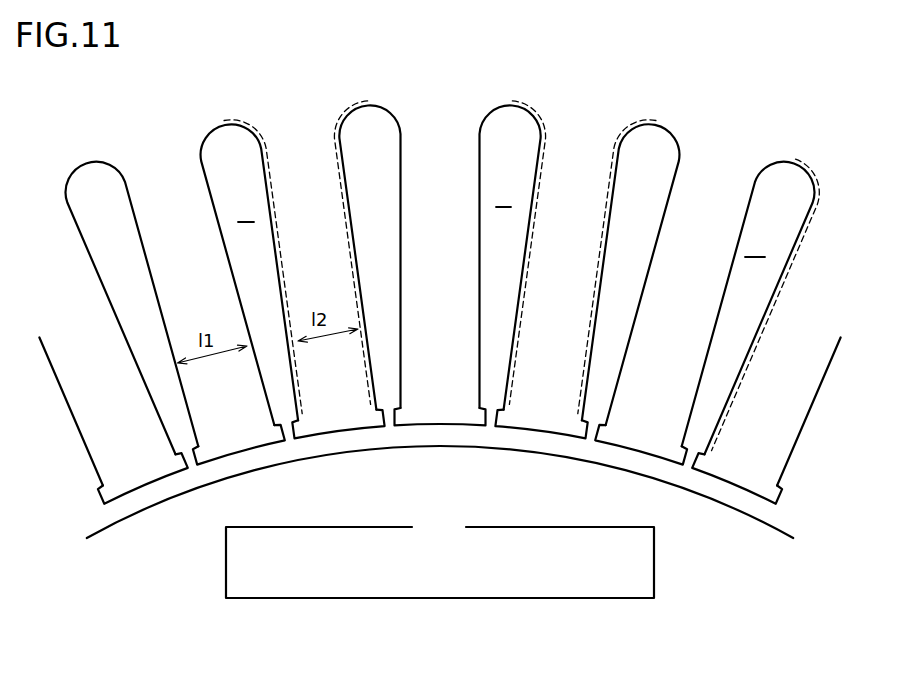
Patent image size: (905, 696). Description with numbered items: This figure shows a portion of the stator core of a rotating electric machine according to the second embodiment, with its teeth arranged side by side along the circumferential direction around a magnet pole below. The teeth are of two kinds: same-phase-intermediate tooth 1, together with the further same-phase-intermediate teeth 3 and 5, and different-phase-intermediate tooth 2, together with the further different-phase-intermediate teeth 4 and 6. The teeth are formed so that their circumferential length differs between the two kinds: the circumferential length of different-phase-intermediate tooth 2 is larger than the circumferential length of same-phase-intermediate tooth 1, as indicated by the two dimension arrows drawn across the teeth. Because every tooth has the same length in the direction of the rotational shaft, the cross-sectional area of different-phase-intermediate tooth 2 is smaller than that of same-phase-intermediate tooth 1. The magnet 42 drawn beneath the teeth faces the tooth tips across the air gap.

The same-phase-intermediate tooth 1 is at (165, 187).
The different-phase-intermediate tooth 2 is at (300, 168).
The same-phase-intermediate tooth 3 is at (438, 158).
The different-phase-intermediate tooth 4 is at (577, 167).
The same-phase-intermediate tooth 5 is at (714, 192).
The different-phase-intermediate tooth 6 is at (830, 260).
The magnet (rotor magnet 42A) 42 is at (575, 598).